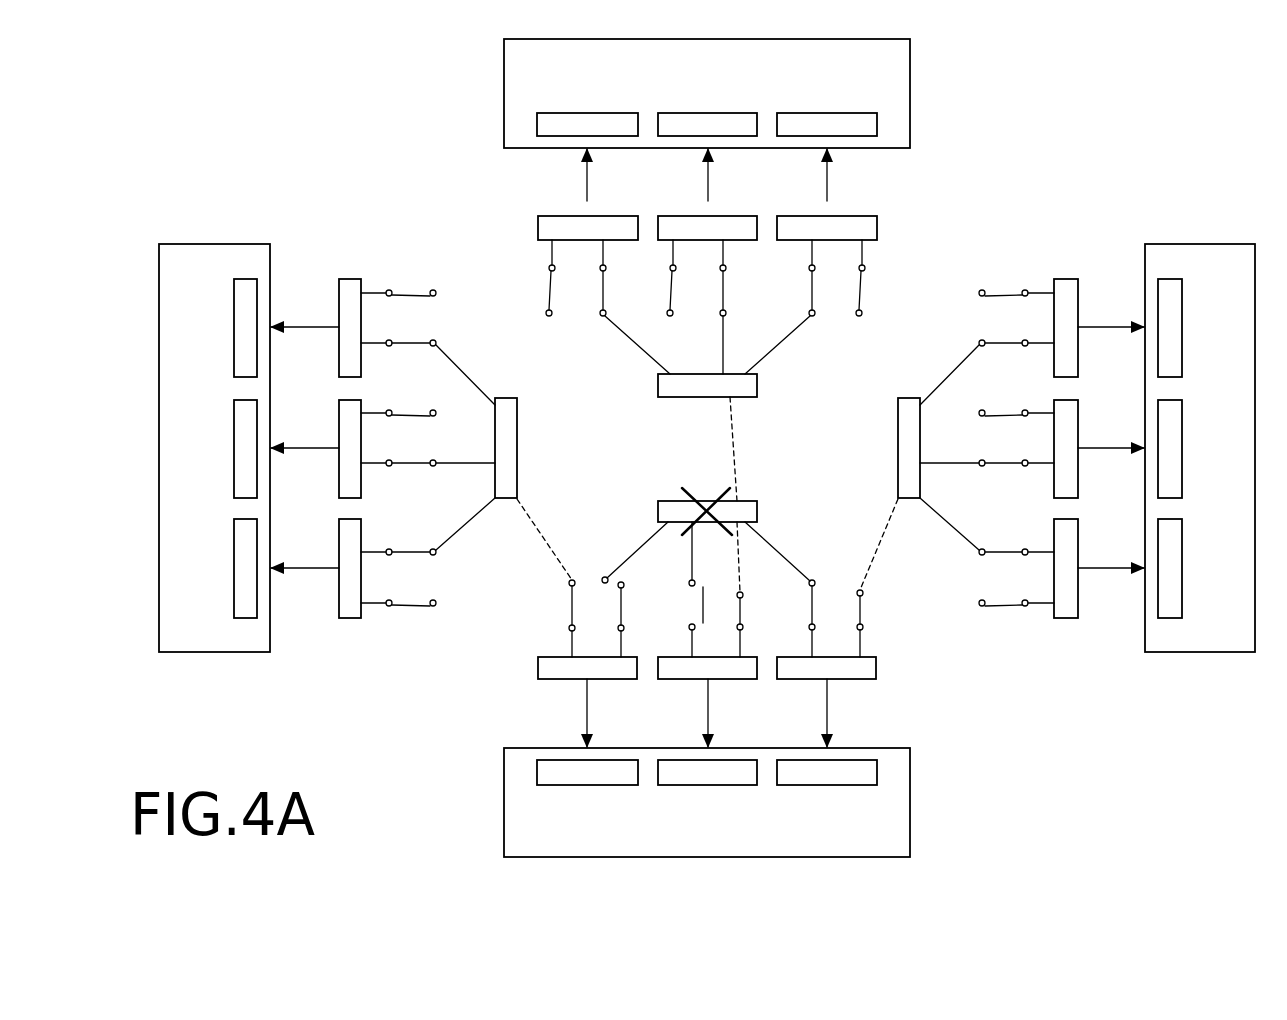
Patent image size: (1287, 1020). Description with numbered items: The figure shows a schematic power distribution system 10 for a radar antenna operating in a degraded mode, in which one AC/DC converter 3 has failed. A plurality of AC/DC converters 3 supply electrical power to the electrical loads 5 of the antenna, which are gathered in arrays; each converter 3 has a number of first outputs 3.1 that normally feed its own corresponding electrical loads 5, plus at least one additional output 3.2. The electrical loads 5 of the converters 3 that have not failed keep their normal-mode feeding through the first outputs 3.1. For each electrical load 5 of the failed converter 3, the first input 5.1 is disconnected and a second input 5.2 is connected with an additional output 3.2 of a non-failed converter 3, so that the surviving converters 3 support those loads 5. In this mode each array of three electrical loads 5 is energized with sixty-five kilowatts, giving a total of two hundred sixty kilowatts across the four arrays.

The power distribution system 10 is at (232, 79).
The AC/DC converter 3 is at (658, 381).
The first output 3.1 is at (660, 522).
The additional output 3.2 is at (735, 446).
The electrical load 5 is at (617, 758).
The first input 5.1 is at (628, 643).
The second input 5.2 is at (568, 641).